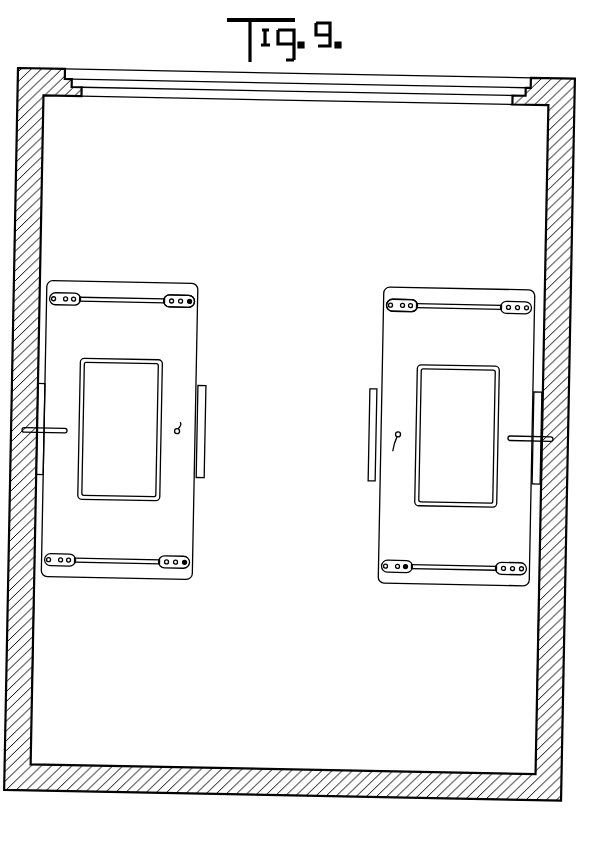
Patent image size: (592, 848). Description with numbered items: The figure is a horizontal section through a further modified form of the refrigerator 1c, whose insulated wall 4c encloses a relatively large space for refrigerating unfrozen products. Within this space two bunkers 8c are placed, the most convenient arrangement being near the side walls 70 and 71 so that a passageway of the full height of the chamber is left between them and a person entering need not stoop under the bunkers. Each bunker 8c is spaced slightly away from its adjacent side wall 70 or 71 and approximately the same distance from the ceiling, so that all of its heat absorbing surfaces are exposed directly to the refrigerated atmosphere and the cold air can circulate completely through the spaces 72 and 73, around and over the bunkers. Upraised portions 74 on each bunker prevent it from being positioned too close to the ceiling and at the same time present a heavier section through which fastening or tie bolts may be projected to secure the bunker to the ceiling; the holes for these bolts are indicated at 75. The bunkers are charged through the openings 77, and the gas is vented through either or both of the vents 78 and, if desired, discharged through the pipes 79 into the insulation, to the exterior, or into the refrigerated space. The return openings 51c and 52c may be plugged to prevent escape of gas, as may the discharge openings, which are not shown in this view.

The refrigerator 1c is at (545, 67).
The casing wall 4c is at (30, 148).
The side wall 70 is at (547, 624).
The side wall 71 is at (41, 640).
The space 72 is at (544, 290).
The space 73 is at (49, 289).
The upraised portion 74 is at (137, 296).
The hole 75 is at (200, 297).
The opening 77 is at (140, 498).
The vent 78 is at (72, 426).
The pipe 79 is at (66, 432).
The return opening 51c is at (212, 428).
The return opening 52c is at (56, 386).
The bunker 8c is at (145, 575).